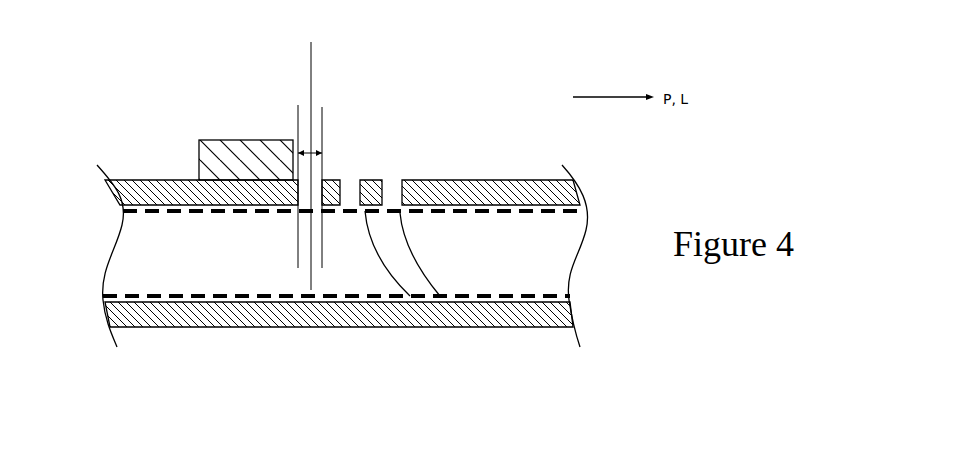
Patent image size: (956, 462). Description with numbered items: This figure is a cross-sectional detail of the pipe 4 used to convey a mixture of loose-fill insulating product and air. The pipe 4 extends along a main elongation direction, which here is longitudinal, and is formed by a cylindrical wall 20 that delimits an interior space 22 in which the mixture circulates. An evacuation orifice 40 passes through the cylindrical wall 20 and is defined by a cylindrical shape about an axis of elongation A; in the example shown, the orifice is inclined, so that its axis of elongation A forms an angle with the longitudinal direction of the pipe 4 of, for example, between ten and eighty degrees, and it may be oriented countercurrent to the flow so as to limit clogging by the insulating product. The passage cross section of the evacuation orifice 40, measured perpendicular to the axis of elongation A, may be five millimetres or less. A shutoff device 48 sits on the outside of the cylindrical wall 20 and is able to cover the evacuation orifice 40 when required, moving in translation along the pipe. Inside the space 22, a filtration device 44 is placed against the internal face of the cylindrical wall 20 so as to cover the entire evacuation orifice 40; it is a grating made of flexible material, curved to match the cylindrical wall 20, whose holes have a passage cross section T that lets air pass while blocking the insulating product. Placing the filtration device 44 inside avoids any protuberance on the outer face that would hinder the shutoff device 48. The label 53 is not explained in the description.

The pipe 4 is at (163, 103).
The cylindrical wall 20 is at (177, 180).
The space 22 is at (215, 288).
The shutoff device 48 is at (235, 140).
The slot 53 is at (322, 107).
The evacuation orifice 40 is at (400, 180).
The filtration device 44 is at (480, 300).
The axis of elongation A is at (310, 82).
The passage cross section T is at (437, 300).